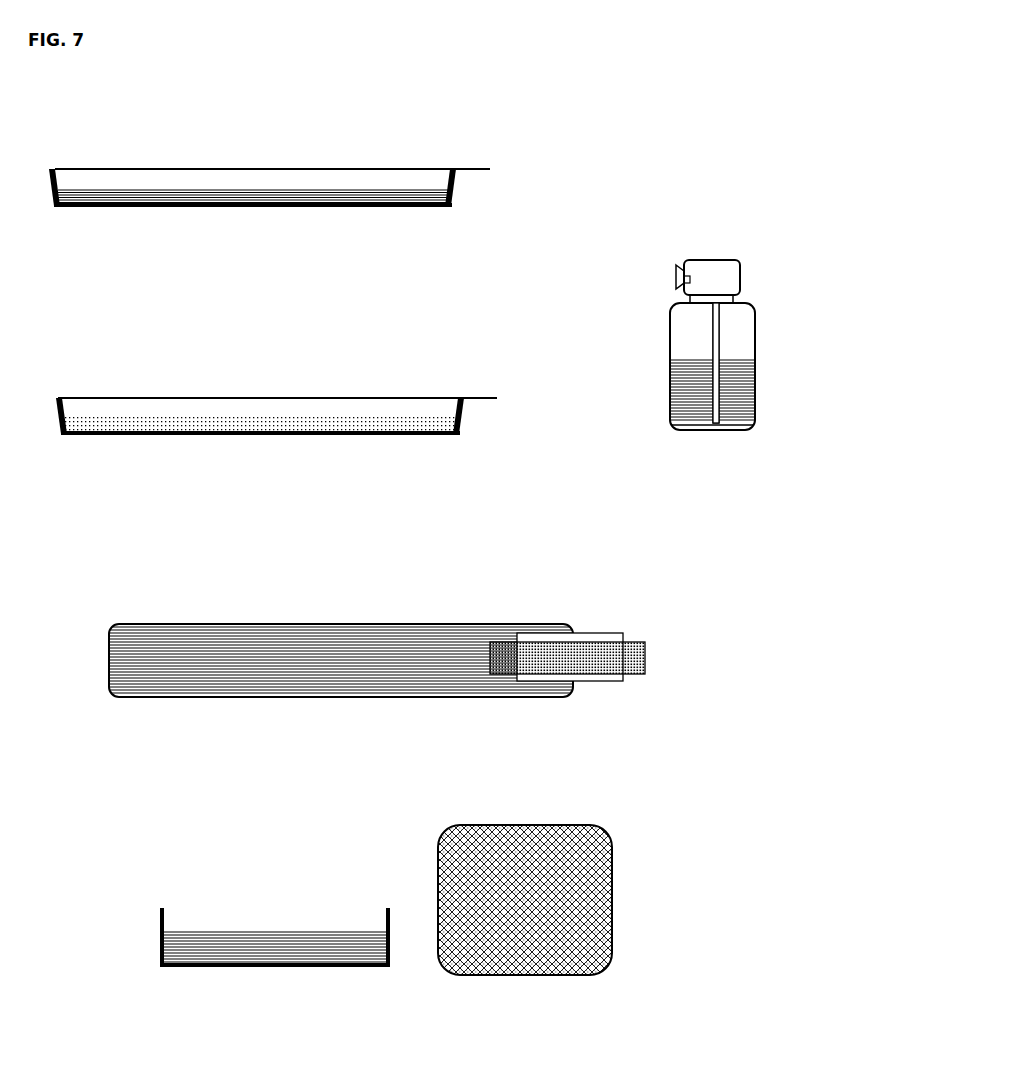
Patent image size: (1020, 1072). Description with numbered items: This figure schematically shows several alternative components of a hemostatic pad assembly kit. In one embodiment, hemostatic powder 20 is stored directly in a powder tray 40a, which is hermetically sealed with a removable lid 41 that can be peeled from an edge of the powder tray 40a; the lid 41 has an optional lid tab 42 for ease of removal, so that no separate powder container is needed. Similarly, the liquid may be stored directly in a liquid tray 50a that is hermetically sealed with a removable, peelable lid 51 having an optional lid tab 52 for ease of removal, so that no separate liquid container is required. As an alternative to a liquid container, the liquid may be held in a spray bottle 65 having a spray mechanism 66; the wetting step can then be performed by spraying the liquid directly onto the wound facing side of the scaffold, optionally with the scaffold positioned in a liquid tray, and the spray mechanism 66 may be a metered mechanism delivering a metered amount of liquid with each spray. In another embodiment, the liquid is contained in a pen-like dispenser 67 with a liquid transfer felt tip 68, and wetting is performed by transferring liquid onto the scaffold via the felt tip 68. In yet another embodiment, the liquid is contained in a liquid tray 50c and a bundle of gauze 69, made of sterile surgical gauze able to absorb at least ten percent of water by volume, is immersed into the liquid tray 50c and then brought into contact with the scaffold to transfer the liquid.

The hemostatic powder 20 is at (259, 451).
The powder tray 40a is at (314, 448).
The lid 41 is at (260, 358).
The lid tab 42 is at (517, 357).
The liquid tray 50a is at (274, 221).
The liquid tray 50c is at (281, 970).
The peelable lid 51 is at (255, 128).
The lid tab 52 is at (515, 127).
The spray bottle 65 is at (782, 345).
The spray mechanism 66 is at (741, 239).
The pen-like dispenser 67 is at (341, 627).
The liquid transfer felt tip 68 is at (608, 632).
The bundle of gauze 69 is at (566, 900).